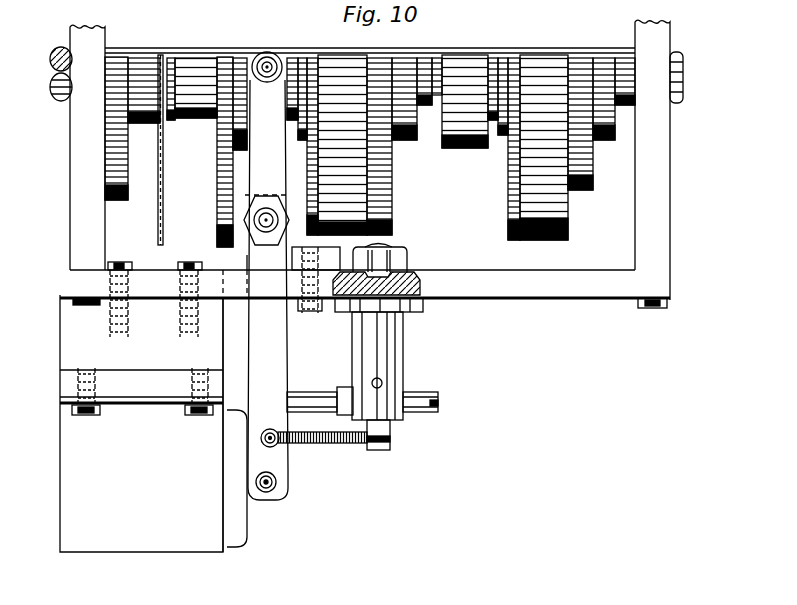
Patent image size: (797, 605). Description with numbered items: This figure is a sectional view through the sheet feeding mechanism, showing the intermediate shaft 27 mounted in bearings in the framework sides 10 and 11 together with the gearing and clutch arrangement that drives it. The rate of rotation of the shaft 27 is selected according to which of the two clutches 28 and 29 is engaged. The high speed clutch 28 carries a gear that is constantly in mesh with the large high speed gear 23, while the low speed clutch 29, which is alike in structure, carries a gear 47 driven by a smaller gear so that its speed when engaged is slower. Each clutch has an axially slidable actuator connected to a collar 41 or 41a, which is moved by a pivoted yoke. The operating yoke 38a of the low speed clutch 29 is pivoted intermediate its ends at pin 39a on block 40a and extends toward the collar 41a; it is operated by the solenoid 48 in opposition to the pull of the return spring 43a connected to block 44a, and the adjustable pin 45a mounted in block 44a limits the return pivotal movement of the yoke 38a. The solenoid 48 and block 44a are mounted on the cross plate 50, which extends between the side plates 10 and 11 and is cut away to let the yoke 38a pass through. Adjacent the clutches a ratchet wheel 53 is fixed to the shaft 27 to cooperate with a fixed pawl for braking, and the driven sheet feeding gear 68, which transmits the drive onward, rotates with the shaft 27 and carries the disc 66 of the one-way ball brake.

The side 10 is at (73, 158).
The side 11 is at (666, 222).
The large gear 23 is at (593, 165).
The intermediate shaft 27 is at (62, 101).
The clutch 28 is at (569, 235).
The clutch 29 is at (394, 179).
The collar 41 is at (469, 148).
The gear 47 is at (392, 168).
The solenoid 48 is at (160, 472).
The cross plate 50 is at (670, 291).
The ratchet wheel 53 is at (217, 205).
The disc 66 is at (162, 192).
The driven sheet feeding gear 68 is at (125, 200).
The yoke 38a is at (271, 53).
The pin 39a is at (266, 233).
The block 40a is at (247, 259).
The collar 41a is at (250, 81).
The return spring 43a is at (330, 443).
The block 44a is at (354, 345).
The adjustable pin 45a is at (287, 392).